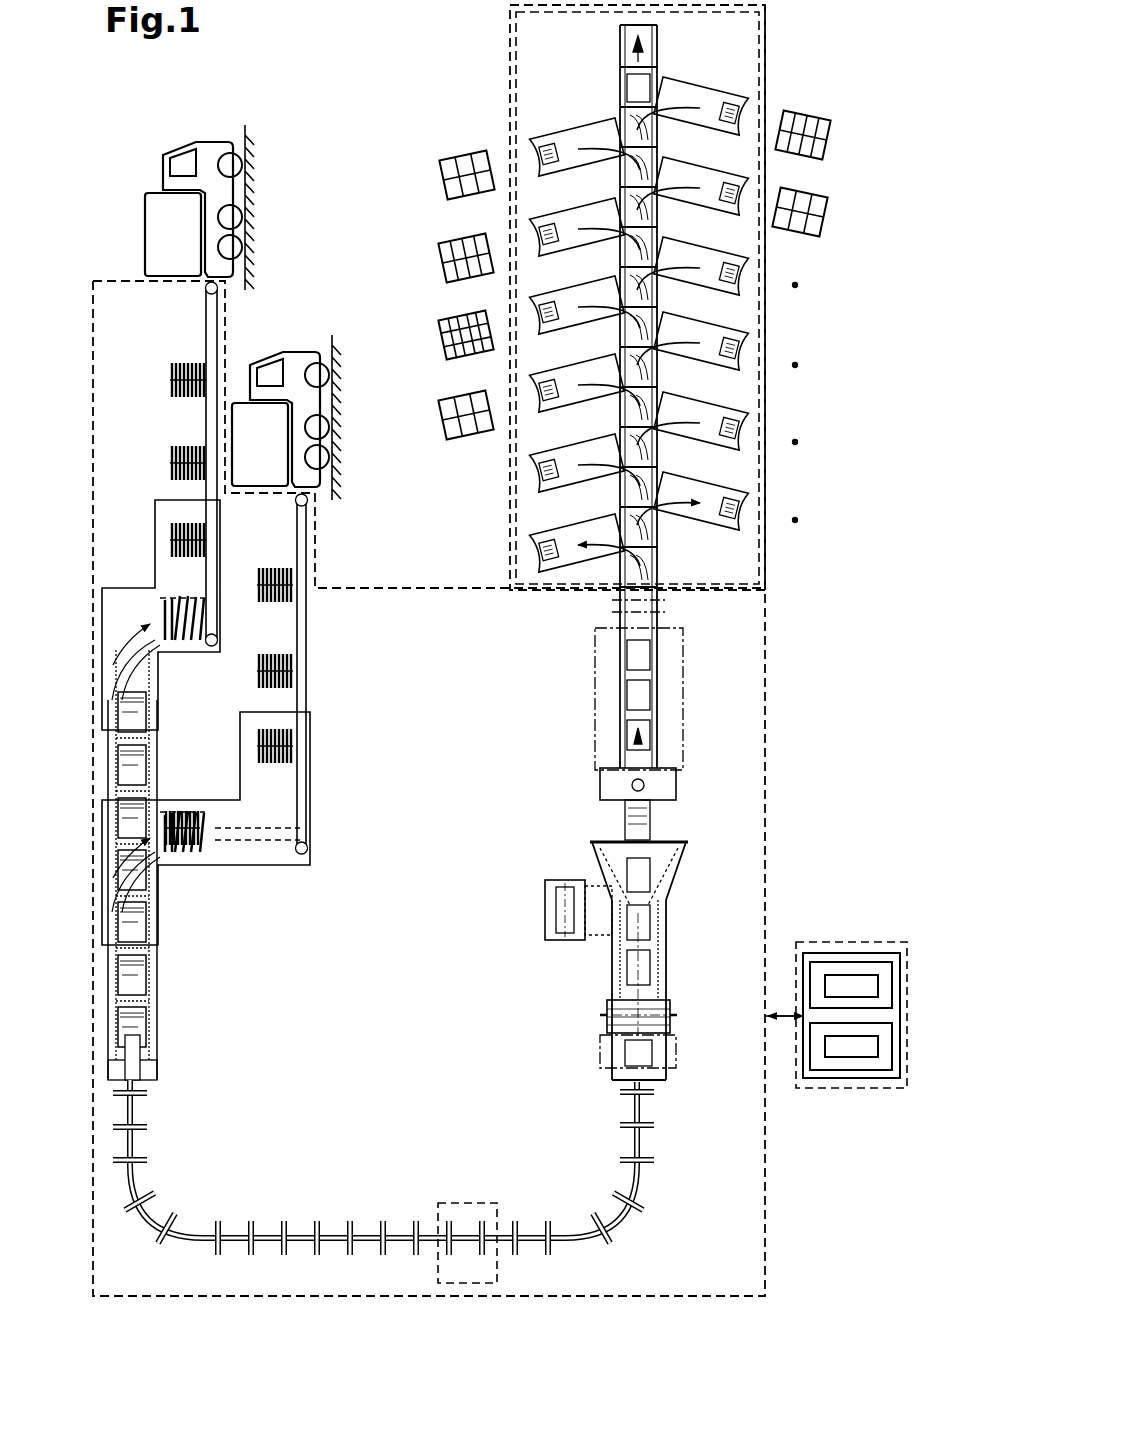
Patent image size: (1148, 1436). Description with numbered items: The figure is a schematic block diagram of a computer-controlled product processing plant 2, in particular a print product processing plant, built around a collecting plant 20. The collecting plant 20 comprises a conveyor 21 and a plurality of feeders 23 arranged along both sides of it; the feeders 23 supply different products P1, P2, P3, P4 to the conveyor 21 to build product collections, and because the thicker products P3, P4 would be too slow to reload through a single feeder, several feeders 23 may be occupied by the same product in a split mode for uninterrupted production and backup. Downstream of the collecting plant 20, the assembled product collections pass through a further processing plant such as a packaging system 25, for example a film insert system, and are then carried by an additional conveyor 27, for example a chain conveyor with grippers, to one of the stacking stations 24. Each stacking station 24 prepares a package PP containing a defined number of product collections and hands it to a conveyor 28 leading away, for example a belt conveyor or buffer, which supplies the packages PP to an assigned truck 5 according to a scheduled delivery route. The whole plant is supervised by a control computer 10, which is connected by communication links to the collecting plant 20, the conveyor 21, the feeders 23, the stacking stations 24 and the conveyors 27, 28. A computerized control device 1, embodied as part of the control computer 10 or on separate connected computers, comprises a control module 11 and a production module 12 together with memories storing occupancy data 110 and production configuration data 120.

The computerized control device 1 is at (839, 1019).
The product processing plant 2 is at (777, 1222).
The truck 5 is at (214, 128).
The control computer 10 is at (819, 944).
The control module 11 is at (861, 945).
The production module 12 is at (861, 1089).
The occupancy data 110 is at (850, 981).
The production configuration data 120 is at (850, 1050).
The collecting plant 20 is at (540, 592).
The conveyor 21 is at (631, 80).
The feeders 23 is at (548, 121).
The stacking stations 24 is at (135, 584).
The packaging system 25 is at (590, 984).
The additional conveyor 27 is at (321, 1204).
The conveyor leading away 28 is at (208, 336).
The package PP is at (161, 437).
The product P1 is at (452, 412).
The product P2 is at (452, 333).
The product P3 is at (452, 256).
The product P4 is at (452, 173).